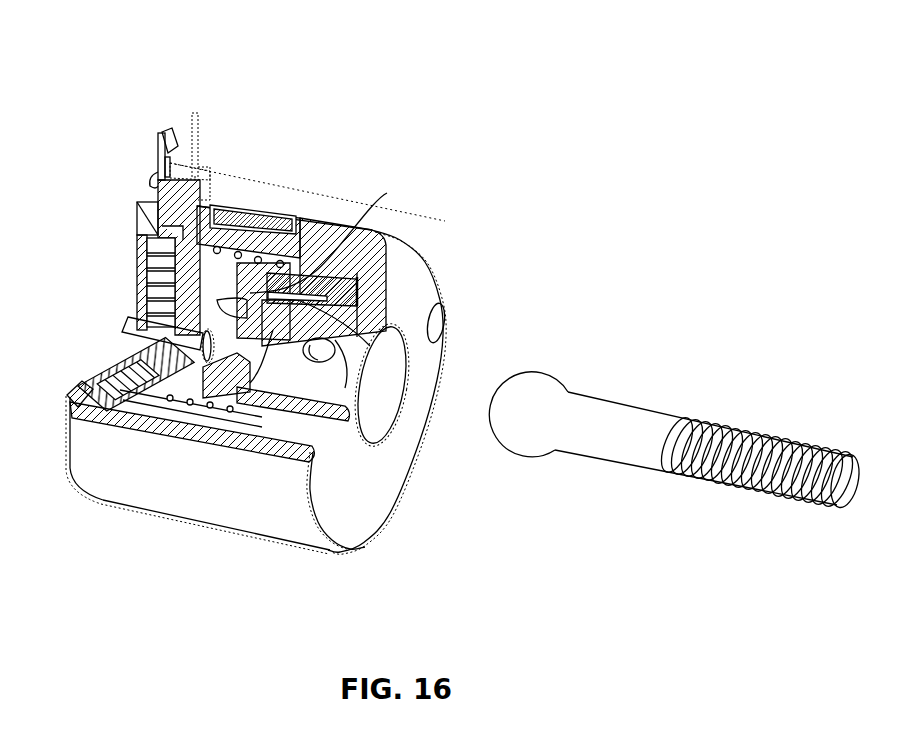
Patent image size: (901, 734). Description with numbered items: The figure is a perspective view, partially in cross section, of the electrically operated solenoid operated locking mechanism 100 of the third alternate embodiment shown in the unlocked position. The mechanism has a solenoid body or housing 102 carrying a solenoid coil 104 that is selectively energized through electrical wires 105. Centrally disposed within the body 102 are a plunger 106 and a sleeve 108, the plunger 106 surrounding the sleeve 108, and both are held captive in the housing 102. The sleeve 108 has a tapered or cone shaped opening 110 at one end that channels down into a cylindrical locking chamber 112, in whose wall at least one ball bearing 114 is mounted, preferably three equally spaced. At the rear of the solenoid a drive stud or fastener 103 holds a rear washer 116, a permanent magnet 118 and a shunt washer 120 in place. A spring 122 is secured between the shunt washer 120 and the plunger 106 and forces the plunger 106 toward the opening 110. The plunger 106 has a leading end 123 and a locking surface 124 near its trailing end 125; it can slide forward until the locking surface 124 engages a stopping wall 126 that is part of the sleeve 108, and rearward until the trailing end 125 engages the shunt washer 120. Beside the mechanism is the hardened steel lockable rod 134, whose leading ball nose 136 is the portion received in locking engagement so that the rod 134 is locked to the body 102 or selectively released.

The solenoid operated locking mechanism 100 is at (409, 62).
The solenoid body or housing 102 is at (205, 505).
The drive stud or fastener 103 is at (132, 325).
The solenoid coil 104 is at (277, 237).
The electrical wires 105 is at (195, 115).
The plunger 106 is at (350, 232).
The sleeve 108 is at (342, 317).
The tapered or cone shaped opening 110 is at (372, 422).
The cylindrical locking chamber 112 is at (370, 408).
The ball bearing 114 is at (395, 475).
The rear washer 116 is at (85, 377).
The permanent magnet 118 is at (132, 367).
The shunt washer 120 is at (190, 273).
The spring 122 is at (224, 233).
The leading end 123 is at (363, 287).
The locking surface or member 124 is at (332, 290).
The trailing end 125 is at (242, 298).
The stopping wall 126 is at (357, 370).
The lockable rod 134 is at (674, 416).
The leading ball nose 136 is at (530, 378).